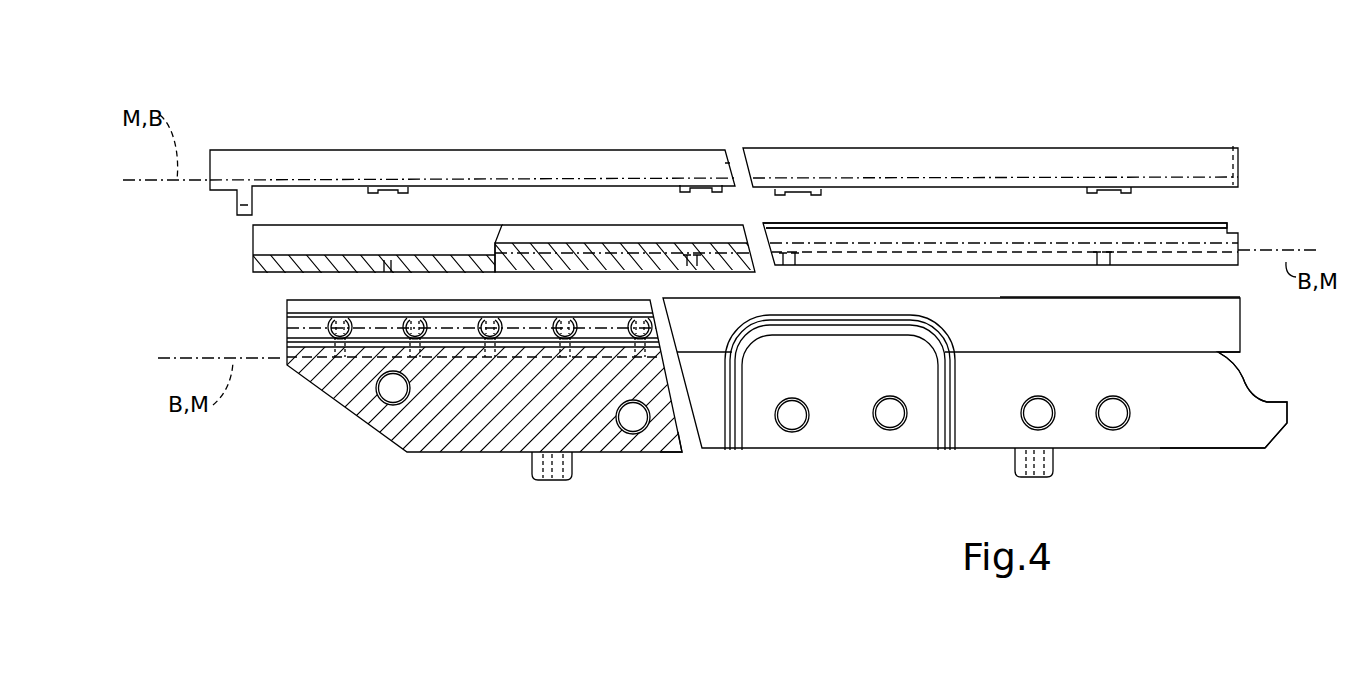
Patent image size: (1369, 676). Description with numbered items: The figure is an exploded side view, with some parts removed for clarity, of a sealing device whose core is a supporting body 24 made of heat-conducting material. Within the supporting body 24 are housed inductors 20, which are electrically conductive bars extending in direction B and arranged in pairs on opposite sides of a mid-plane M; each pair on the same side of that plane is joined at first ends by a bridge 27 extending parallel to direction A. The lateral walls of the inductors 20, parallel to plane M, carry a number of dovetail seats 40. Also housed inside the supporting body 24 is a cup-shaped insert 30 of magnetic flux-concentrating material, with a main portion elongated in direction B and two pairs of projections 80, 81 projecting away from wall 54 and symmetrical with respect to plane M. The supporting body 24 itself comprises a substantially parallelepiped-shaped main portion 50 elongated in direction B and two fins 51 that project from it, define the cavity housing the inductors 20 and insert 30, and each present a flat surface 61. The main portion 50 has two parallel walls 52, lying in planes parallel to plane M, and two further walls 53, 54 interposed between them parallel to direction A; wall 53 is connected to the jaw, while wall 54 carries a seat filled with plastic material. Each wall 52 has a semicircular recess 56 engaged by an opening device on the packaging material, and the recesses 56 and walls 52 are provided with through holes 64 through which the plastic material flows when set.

The inductor 20 is at (1022, 163).
The supporting body 24 is at (1232, 417).
The bridge 27 is at (1233, 146).
The insert 30 is at (268, 233).
The dovetail seat 40 is at (388, 189).
The main portion 50 is at (439, 437).
The fin 51 is at (1220, 325).
The wall 52 is at (1172, 418).
The wall 53 is at (667, 455).
The wall 54 is at (1230, 425).
The semicircular recess 56 is at (752, 378).
The flat surface 61 is at (1192, 313).
The through hole 64 is at (343, 313).
The projection 80 is at (1222, 233).
The projection 81 is at (1215, 222).